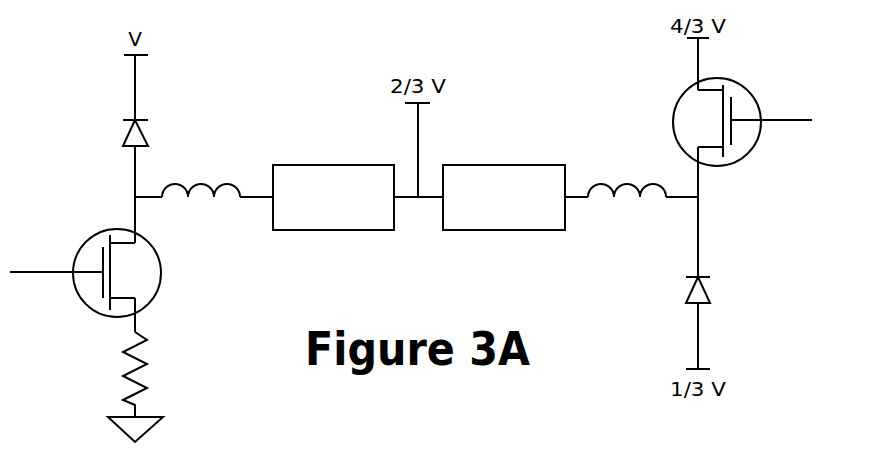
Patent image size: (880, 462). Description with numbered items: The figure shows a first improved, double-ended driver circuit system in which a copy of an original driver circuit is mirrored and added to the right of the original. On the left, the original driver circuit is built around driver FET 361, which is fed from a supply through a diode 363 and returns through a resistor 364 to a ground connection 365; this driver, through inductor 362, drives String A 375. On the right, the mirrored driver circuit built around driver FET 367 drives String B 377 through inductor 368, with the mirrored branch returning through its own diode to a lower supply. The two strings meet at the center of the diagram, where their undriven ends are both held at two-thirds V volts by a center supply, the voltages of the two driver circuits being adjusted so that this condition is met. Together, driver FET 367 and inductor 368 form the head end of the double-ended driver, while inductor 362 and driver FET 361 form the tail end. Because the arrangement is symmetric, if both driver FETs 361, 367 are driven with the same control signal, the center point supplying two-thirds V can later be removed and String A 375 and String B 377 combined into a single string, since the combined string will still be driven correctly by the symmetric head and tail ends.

The driver FET 361 is at (85, 280).
The inductor 362 is at (204, 206).
The diode 363 is at (116, 134).
The resistor 364 is at (161, 374).
The ground 365 is at (115, 427).
The driver FET 367 is at (743, 137).
The inductor 368 is at (631, 205).
The String A 375 is at (333, 197).
The String B 377 is at (504, 197).